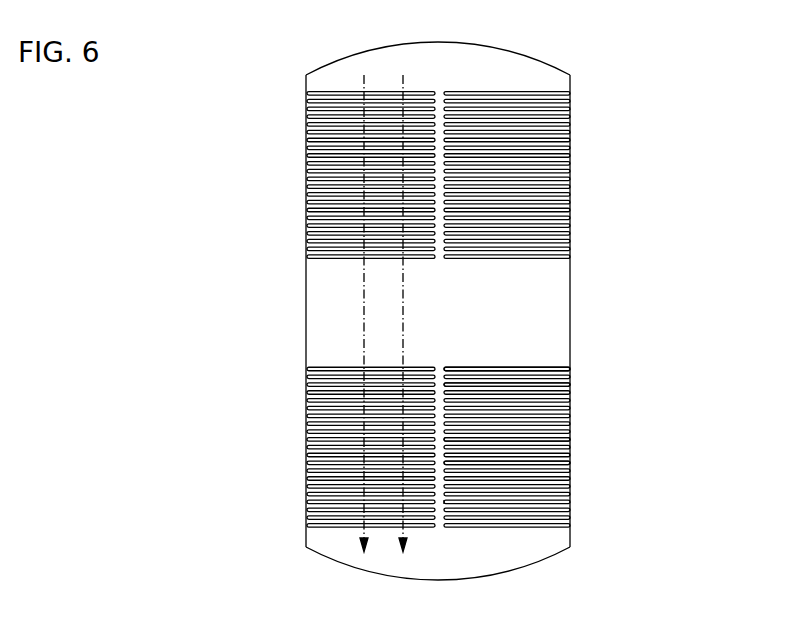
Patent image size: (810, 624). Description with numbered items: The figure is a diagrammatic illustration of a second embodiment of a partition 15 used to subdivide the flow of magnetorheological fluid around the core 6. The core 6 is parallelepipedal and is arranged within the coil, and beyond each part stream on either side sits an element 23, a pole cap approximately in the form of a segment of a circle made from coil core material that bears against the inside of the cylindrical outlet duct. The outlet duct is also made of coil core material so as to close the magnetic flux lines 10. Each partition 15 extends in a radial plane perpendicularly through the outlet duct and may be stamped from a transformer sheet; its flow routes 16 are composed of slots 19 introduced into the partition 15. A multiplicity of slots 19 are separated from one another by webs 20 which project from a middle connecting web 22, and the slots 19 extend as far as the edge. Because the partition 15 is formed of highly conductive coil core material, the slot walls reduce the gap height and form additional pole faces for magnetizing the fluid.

The core 6 is at (548, 288).
The magnetic flux lines 10 is at (364, 290).
The partition 15 is at (539, 79).
The flow routes 16 is at (569, 162).
The slots 19 is at (571, 367).
The webs 20 is at (571, 385).
The connecting web 22 is at (441, 502).
The pole cap 23 is at (521, 64).